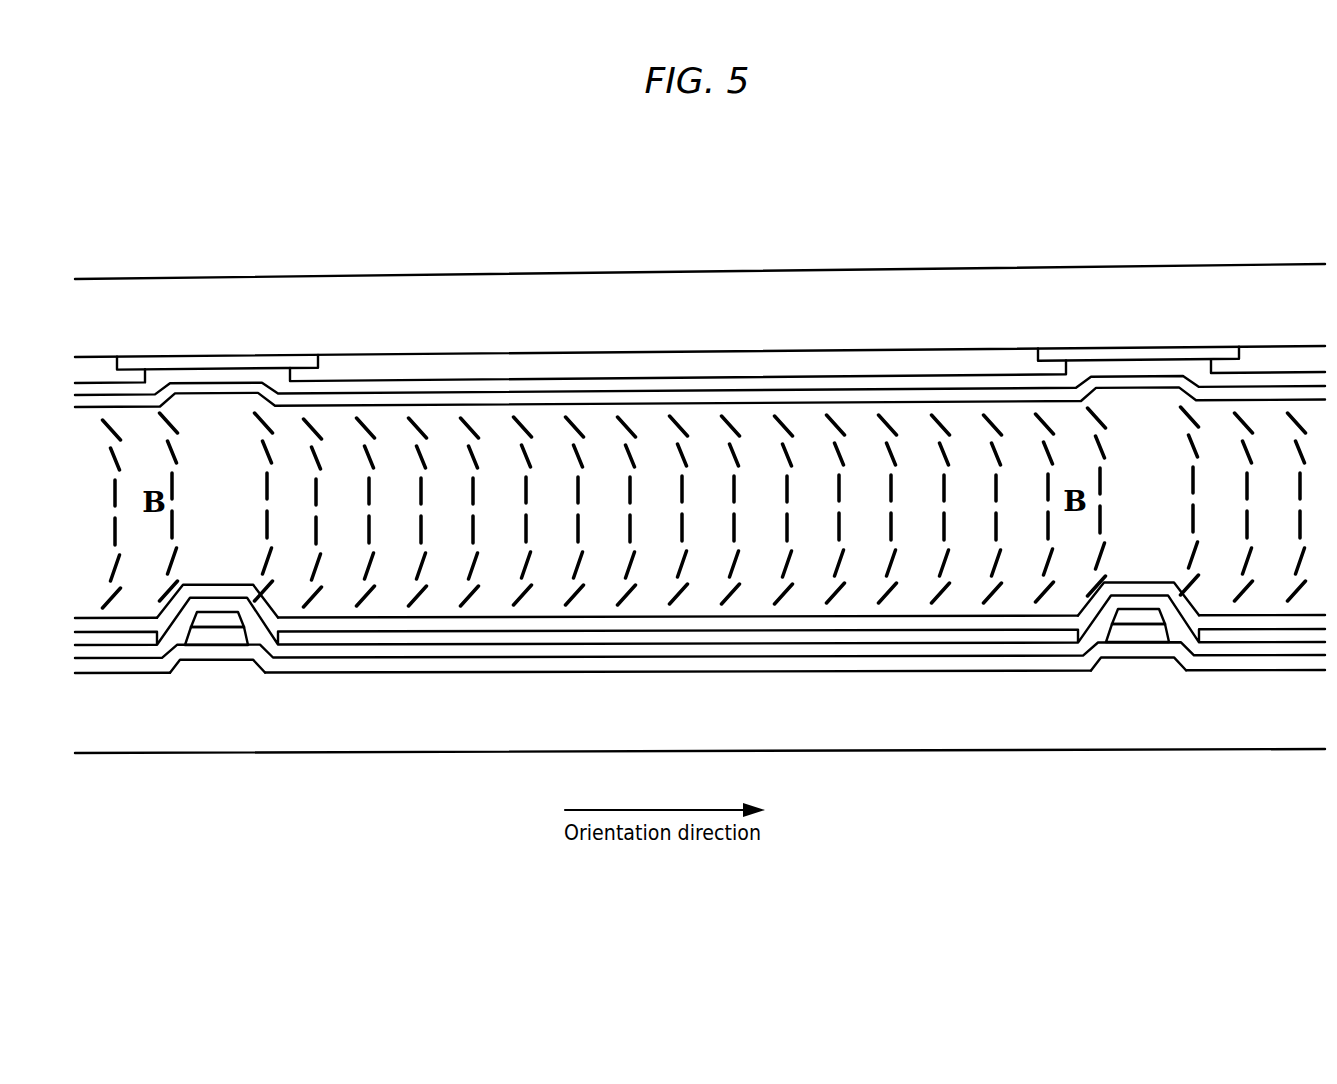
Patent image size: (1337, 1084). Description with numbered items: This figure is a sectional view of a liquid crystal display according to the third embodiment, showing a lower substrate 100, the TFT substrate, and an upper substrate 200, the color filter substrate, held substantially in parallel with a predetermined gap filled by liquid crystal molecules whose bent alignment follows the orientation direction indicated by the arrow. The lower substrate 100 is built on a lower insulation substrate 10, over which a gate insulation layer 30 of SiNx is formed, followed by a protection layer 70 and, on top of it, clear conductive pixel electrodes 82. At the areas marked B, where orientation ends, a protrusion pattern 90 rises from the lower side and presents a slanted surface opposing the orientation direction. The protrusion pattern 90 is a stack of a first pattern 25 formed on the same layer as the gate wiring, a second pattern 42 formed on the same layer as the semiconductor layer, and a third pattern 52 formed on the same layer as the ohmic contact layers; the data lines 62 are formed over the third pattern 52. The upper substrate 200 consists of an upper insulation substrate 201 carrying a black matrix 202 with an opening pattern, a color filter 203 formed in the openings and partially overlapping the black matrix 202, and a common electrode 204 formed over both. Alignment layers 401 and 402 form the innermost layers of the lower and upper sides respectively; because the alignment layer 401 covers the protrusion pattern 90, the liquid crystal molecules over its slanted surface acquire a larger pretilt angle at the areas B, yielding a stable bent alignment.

The lower insulation substrate 10 is at (1095, 740).
The first pattern 25 is at (188, 673).
The gate insulation layer 30 is at (117, 673).
The second pattern 42 is at (228, 637).
The third pattern 52 is at (205, 630).
The data lines 62 is at (237, 620).
The protection layer 70 is at (441, 656).
The pixel electrodes 82 is at (877, 638).
The protrusion pattern 90 is at (228, 565).
The lower substrate 100 is at (700, 679).
The upper substrate 200 is at (700, 291).
The upper insulation substrate 201 is at (370, 278).
The black matrix 202 is at (263, 360).
The color filter 203 is at (482, 360).
The common electrode 204 is at (573, 388).
The alignment layer 401 is at (960, 625).
The alignment layer 402 is at (204, 385).